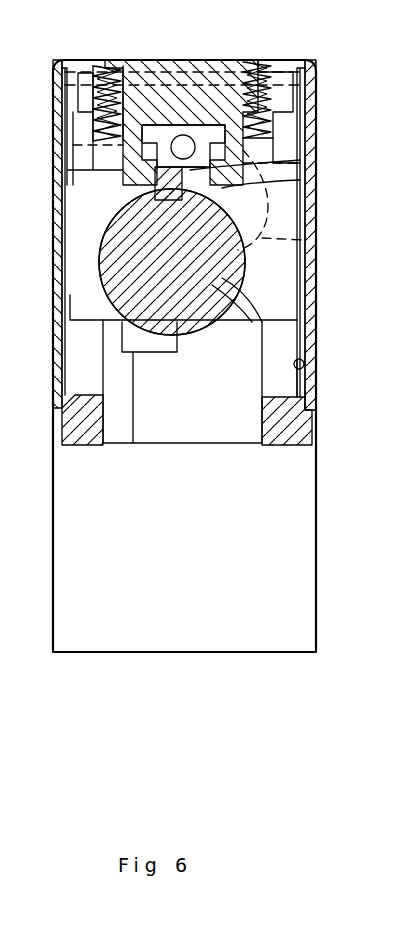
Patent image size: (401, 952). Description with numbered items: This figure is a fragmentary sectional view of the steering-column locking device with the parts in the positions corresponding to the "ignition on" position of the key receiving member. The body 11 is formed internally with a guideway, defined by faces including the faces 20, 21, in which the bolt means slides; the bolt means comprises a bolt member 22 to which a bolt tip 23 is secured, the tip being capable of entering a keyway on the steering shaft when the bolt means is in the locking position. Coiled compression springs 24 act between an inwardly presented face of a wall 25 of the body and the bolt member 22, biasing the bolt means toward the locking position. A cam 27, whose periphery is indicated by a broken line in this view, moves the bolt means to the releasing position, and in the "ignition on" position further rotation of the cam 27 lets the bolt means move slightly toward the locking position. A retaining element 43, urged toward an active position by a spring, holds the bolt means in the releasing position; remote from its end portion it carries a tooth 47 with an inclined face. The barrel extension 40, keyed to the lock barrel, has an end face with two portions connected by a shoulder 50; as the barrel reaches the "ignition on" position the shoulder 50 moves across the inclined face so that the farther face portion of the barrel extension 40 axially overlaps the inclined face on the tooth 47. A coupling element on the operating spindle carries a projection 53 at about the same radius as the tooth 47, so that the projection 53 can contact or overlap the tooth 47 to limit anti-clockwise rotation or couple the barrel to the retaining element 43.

The body 11 is at (312, 270).
The guideway face 20 is at (300, 372).
The guideway face 21 is at (56, 374).
The bolt member 22 is at (293, 145).
The bolt tip 23 is at (226, 402).
The coiled compression spring 24 is at (88, 62).
The wall 25 is at (162, 62).
The cam 27 is at (305, 240).
The barrel extension 40 is at (126, 295).
The retaining element 43 is at (212, 122).
The tooth 47 is at (280, 194).
The shoulder 50 is at (265, 168).
The projection 53 is at (248, 304).